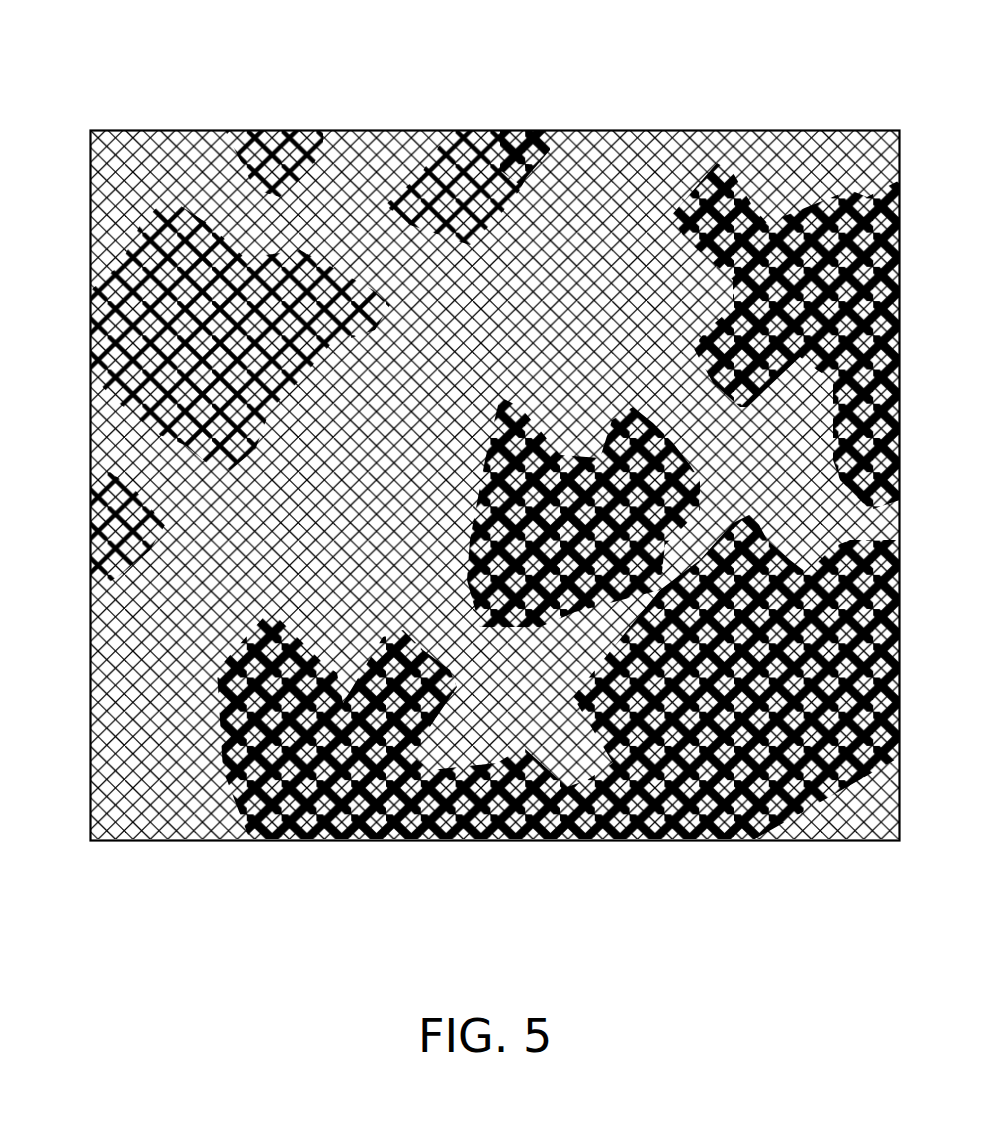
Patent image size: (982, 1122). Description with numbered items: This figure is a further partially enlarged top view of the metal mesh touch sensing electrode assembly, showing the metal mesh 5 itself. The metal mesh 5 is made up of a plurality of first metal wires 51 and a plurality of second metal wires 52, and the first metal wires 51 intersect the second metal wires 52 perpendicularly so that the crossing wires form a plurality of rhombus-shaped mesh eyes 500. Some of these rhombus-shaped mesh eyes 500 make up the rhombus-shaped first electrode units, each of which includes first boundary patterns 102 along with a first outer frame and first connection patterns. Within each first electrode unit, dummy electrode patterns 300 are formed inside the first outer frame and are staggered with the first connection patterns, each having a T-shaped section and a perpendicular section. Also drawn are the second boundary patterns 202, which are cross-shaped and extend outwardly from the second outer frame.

The metal mesh 5 is at (150, 108).
The first metal wires 51 is at (322, 238).
The second metal wires 52 is at (360, 190).
The first boundary patterns 102 is at (740, 470).
The second boundary patterns 202 is at (755, 208).
The dummy electrode patterns 300 is at (188, 470).
The rhombus-shaped mesh eyes 500 is at (690, 162).